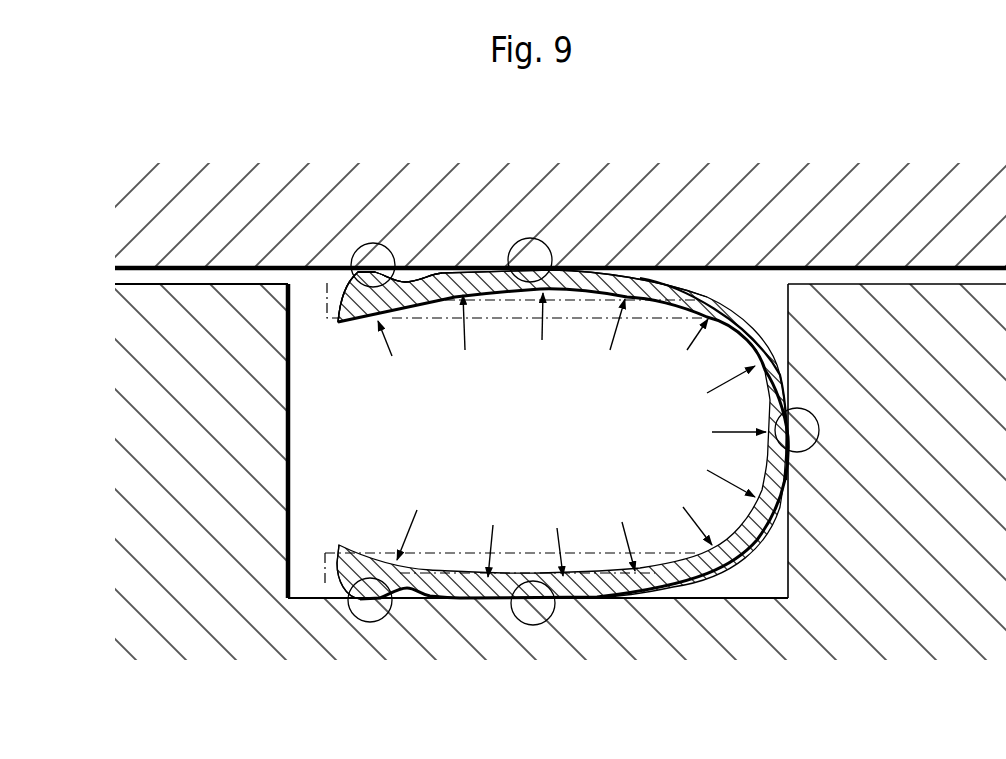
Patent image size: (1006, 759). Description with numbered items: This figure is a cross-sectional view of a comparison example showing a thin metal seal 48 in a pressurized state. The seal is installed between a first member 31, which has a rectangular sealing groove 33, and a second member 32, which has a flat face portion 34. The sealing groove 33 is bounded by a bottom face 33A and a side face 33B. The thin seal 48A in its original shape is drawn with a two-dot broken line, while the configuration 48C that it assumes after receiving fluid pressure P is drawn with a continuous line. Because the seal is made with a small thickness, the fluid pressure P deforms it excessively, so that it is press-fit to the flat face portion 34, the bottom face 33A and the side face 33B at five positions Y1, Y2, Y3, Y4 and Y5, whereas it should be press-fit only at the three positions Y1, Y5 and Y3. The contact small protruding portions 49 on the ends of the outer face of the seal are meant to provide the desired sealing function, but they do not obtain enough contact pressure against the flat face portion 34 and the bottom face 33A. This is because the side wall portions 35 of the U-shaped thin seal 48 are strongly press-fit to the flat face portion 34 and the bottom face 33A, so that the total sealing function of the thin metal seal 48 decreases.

The first member 31 is at (922, 591).
The second member 32 is at (683, 188).
The rectangular sealing groove 33 is at (292, 442).
The bottom face 33A is at (710, 598).
The side face 33B is at (790, 547).
The flat face portion 34 is at (838, 272).
The side wall portions 35 is at (582, 278).
The thin metal seal 48 is at (731, 290).
The thin seal in original shape 48A is at (567, 322).
The deformed configuration 48C is at (437, 285).
The contact small protruding portion 49 is at (372, 283).
The fluid pressure P is at (572, 435).
The press-fit position Y1 is at (374, 246).
The press-fit position Y2 is at (530, 243).
The press-fit position Y3 is at (819, 430).
The press-fit position Y4 is at (533, 619).
The press-fit position Y5 is at (371, 617).